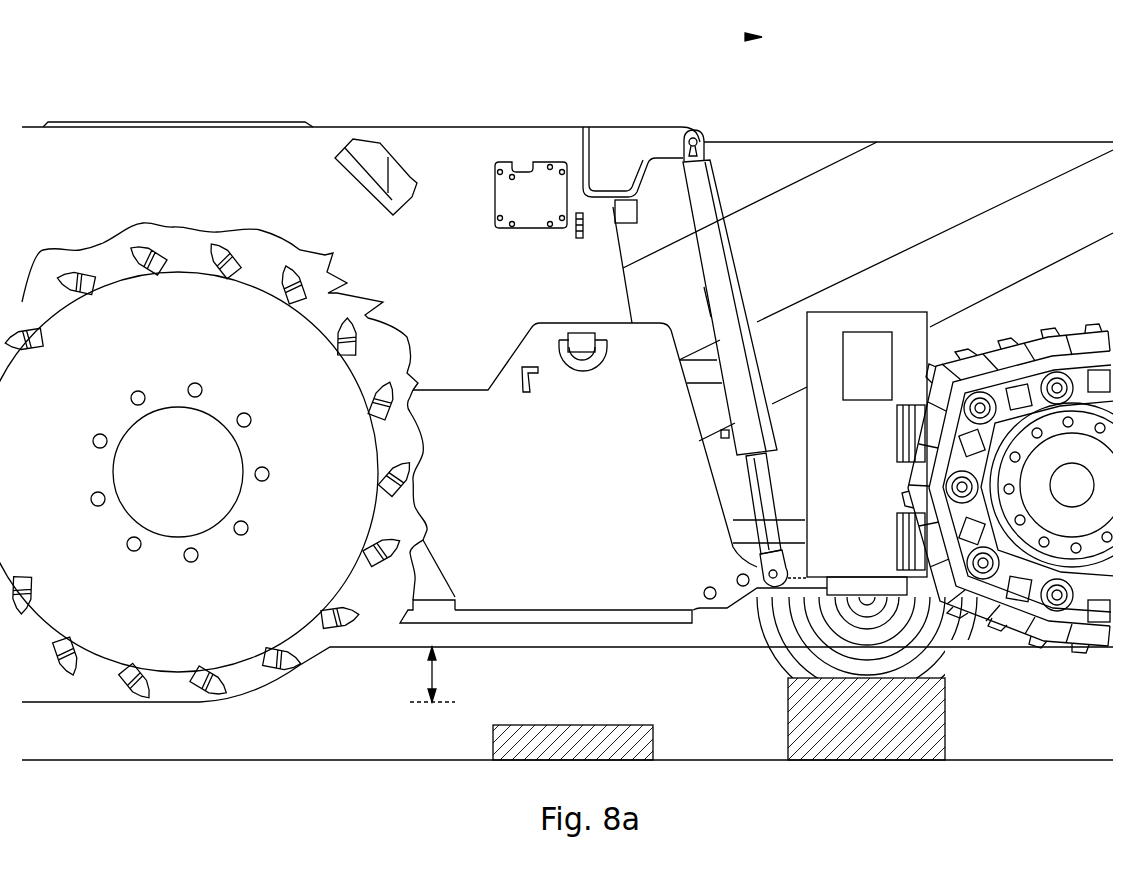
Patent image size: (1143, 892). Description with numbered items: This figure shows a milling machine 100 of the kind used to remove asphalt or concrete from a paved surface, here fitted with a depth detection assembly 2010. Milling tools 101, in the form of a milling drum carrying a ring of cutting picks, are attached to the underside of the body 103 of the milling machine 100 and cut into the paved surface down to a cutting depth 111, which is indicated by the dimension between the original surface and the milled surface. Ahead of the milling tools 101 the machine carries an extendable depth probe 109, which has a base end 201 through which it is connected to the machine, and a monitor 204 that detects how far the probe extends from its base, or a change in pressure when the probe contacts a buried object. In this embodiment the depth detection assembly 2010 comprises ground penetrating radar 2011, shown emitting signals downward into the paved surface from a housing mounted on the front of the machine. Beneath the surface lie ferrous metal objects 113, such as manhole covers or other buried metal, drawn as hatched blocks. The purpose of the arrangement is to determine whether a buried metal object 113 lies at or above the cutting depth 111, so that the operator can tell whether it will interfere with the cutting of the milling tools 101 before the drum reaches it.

The milling machine 100 is at (98, 55).
The milling tools 101 is at (180, 233).
The body 103 is at (773, 247).
The extendable depth probe 109 is at (948, 360).
The cutting depth 111 is at (428, 677).
The ferrous metal object 113 is at (788, 707).
The base end 201 is at (886, 275).
The monitor 204 is at (822, 374).
The depth detection assembly 2010 is at (855, 522).
The ground penetrating radar 2011 is at (908, 609).